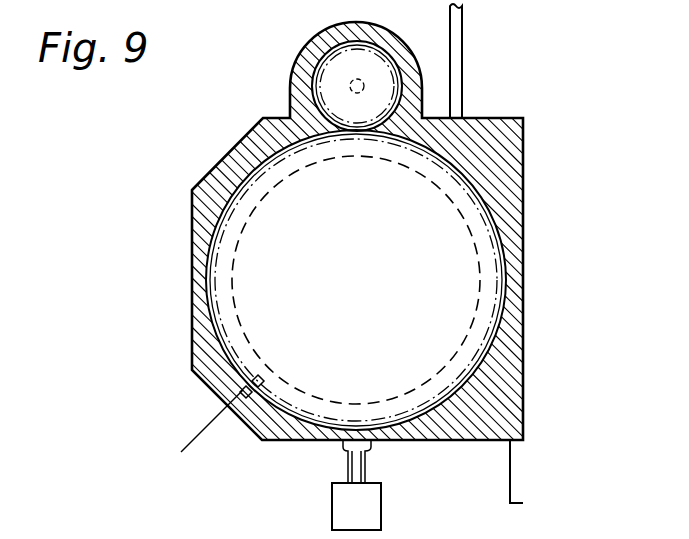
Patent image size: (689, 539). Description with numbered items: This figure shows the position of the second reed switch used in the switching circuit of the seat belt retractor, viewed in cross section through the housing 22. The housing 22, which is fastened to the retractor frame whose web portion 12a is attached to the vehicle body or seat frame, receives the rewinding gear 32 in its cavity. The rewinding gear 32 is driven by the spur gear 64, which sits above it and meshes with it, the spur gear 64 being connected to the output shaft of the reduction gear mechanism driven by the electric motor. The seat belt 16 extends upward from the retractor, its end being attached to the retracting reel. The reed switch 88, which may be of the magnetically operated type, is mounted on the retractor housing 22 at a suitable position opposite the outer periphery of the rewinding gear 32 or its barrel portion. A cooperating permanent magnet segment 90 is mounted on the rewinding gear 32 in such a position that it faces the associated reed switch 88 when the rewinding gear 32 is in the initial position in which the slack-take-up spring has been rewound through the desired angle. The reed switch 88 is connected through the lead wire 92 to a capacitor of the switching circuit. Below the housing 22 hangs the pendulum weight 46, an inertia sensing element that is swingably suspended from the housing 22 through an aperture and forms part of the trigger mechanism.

The seat belt 16 is at (463, 36).
The spur gear 64 is at (387, 83).
The housing 22 is at (525, 172).
The rewinding gear 32 is at (272, 214).
The permanent magnet segment 90 is at (256, 380).
The reed switch 88 is at (243, 391).
The lead wire 92 is at (195, 449).
The web portion 12a is at (525, 471).
The pendulum weight 46 is at (381, 497).